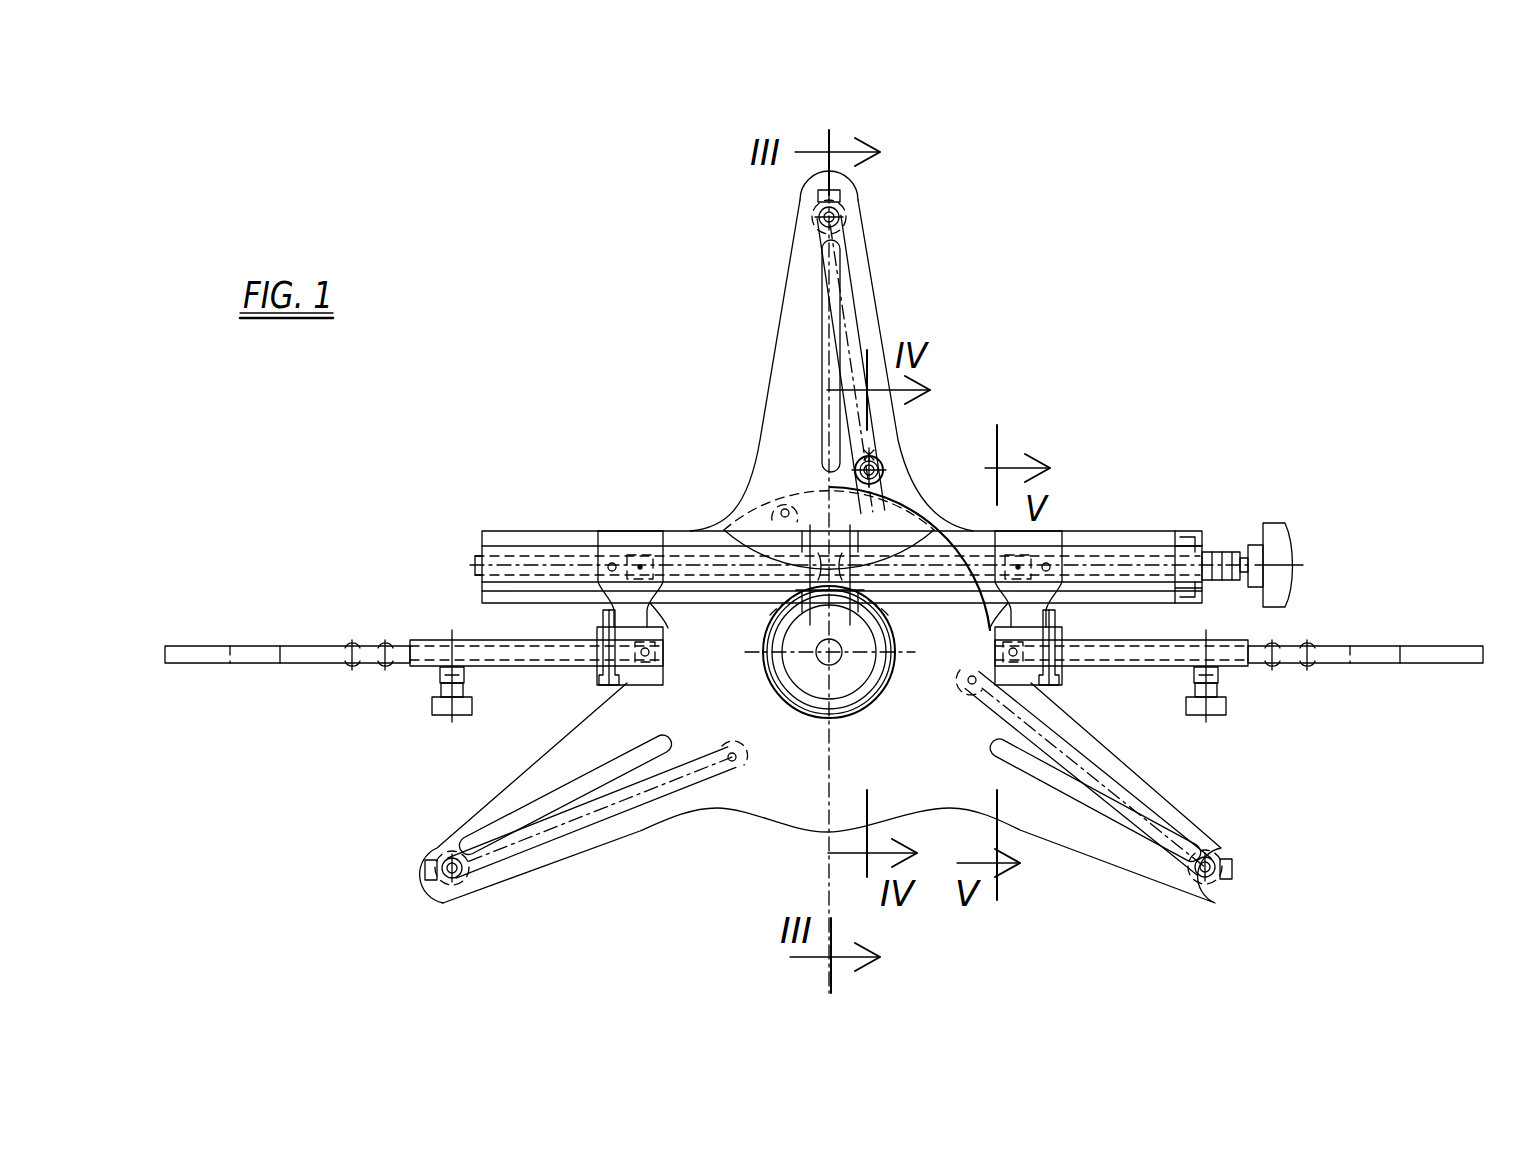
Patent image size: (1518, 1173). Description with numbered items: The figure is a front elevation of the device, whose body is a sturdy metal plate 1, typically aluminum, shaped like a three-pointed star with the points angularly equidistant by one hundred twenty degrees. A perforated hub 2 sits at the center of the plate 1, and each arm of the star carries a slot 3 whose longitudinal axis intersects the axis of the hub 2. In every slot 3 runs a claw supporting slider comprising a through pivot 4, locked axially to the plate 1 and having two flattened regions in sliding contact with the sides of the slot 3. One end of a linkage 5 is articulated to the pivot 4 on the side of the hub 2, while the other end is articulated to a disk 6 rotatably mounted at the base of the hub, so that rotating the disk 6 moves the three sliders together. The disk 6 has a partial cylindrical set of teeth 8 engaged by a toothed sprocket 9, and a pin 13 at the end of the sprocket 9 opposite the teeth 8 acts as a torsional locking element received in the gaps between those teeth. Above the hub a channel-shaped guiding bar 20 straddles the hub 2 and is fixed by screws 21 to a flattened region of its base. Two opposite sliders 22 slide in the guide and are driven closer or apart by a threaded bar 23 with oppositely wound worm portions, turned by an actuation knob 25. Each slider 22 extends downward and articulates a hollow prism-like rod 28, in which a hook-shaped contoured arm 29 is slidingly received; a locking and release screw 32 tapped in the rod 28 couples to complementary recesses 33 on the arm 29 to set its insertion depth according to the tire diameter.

The metal plate 1 is at (870, 252).
The perforated hub 2 is at (806, 684).
The slot 3 is at (846, 322).
The through pivot 4 is at (814, 210).
The linkage 5 is at (797, 316).
The disk 6 is at (775, 790).
The partial cylindrical set of teeth 8 is at (978, 724).
The toothed sprocket 9 is at (884, 478).
The pin 13 is at (874, 456).
The guiding bar 20 is at (550, 536).
The screws 21 is at (770, 612).
The sliders 22 is at (624, 540).
The threaded bar 23 is at (506, 540).
The actuation knob 25 is at (1280, 527).
The hollow prism-like rod 28 is at (541, 666).
The contoured arm 29 is at (255, 645).
The locking and release screw 32 is at (430, 706).
The complementary recesses 33 is at (385, 645).